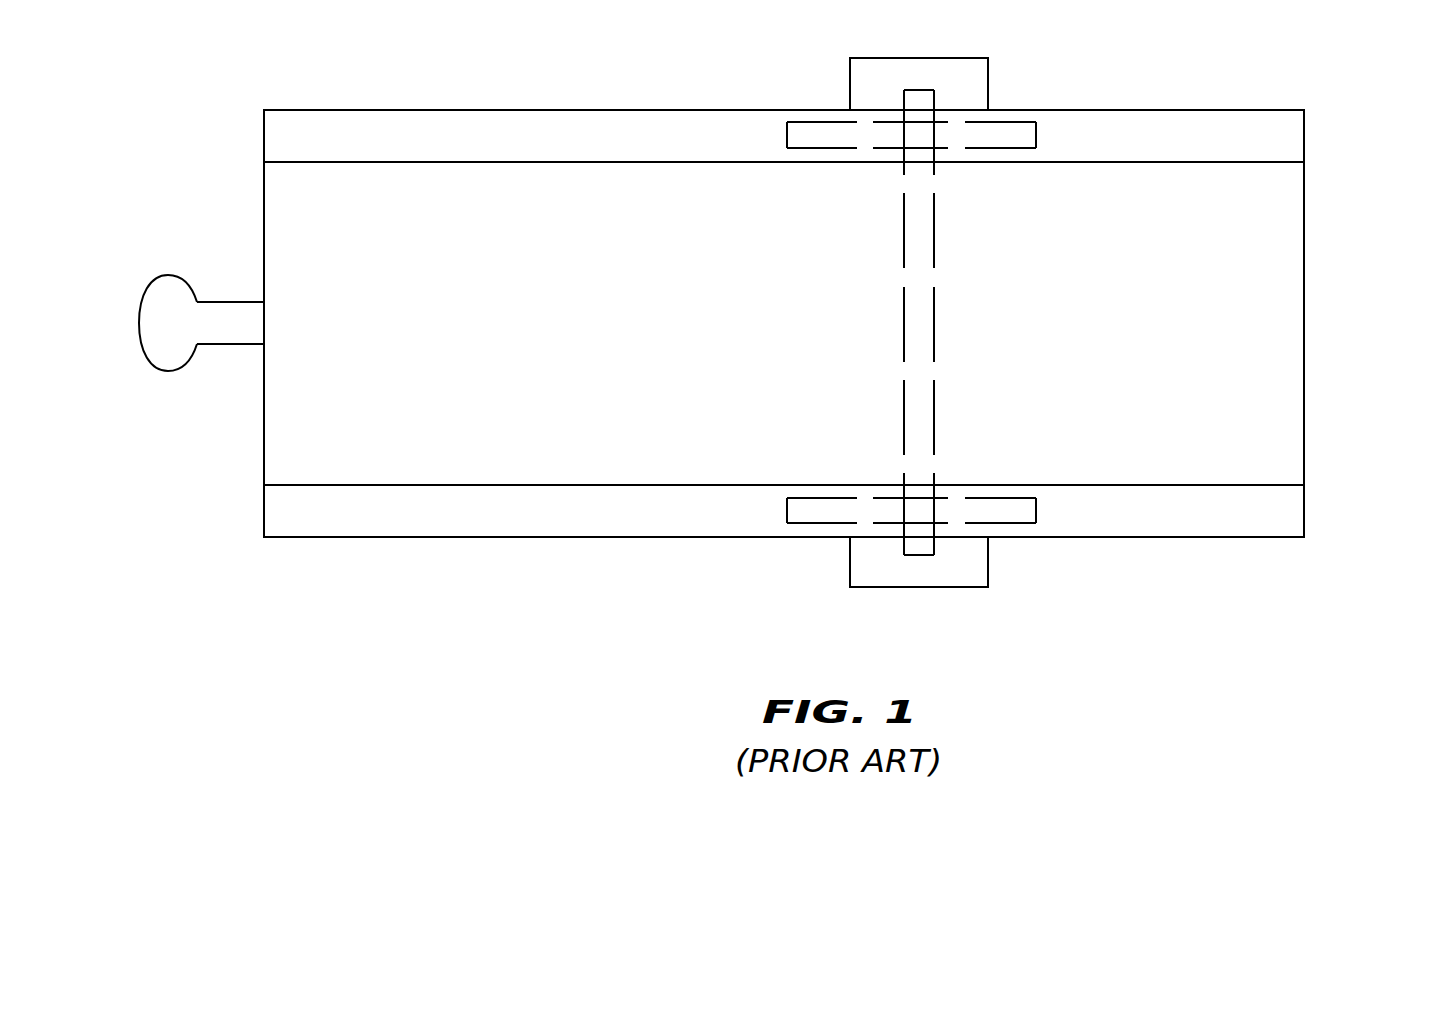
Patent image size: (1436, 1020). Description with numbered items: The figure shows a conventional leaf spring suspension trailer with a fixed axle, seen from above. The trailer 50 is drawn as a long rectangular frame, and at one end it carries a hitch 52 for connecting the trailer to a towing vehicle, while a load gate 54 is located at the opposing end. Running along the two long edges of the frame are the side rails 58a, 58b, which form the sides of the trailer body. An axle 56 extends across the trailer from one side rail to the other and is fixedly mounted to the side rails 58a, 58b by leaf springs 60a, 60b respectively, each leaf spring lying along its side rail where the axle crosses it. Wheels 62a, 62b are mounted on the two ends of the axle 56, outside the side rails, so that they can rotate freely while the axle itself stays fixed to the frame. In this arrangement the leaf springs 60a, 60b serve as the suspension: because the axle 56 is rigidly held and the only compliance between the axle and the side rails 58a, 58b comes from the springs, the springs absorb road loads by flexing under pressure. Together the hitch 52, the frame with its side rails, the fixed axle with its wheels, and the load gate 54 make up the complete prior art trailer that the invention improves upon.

The trailer 50 is at (1208, 108).
The hitch 52 is at (168, 275).
The load gate 54 is at (1304, 320).
The axle 56 is at (934, 310).
The side rail 58a is at (1275, 138).
The side rail 58b is at (1275, 510).
The leaf spring 60a is at (962, 147).
The leaf spring 60b is at (962, 498).
The wheel 62a is at (943, 58).
The wheel 62b is at (942, 588).